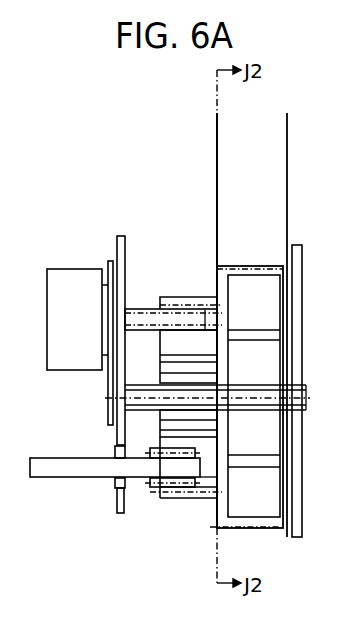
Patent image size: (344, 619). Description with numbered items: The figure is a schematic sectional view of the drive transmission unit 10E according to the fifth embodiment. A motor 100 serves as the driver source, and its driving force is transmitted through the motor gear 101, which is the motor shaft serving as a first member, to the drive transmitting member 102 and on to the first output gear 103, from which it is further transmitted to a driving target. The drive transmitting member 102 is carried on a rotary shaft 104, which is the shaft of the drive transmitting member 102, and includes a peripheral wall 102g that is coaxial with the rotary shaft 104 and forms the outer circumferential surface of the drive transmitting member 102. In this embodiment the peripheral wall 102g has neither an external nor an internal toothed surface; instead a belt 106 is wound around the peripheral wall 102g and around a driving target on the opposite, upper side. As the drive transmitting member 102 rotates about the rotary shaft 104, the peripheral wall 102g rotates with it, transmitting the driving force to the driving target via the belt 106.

The drive transmission unit 10E is at (277, 107).
The motor 100 is at (76, 269).
The motor gear 101 is at (141, 312).
The drive transmitting member 102 is at (194, 294).
The peripheral wall 102g is at (248, 529).
The first output gear 103 is at (79, 471).
The rotary shaft 104 is at (147, 411).
The belt 106 is at (222, 182).